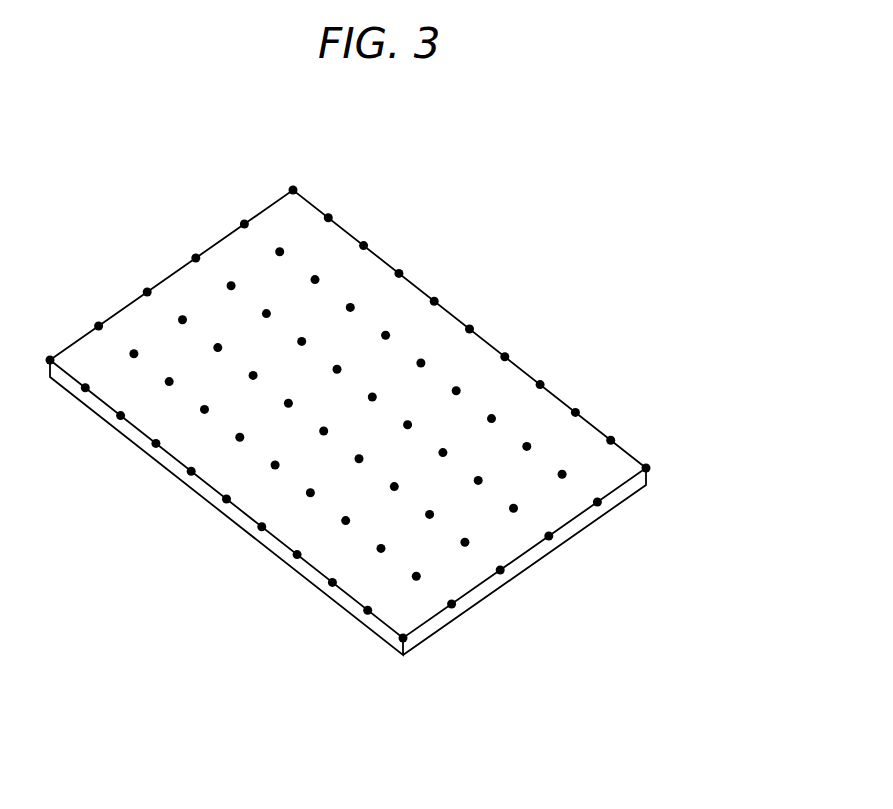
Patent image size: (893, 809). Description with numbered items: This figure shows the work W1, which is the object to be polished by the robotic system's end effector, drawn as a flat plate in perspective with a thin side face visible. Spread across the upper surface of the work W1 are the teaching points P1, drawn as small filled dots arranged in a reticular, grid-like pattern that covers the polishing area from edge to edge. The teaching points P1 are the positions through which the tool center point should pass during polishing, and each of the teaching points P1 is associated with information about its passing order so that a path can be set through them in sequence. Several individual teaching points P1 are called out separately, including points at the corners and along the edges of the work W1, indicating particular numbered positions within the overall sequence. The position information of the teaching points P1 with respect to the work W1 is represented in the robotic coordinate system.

The work W1 is at (130, 317).
The teaching points P1 is at (386, 333).